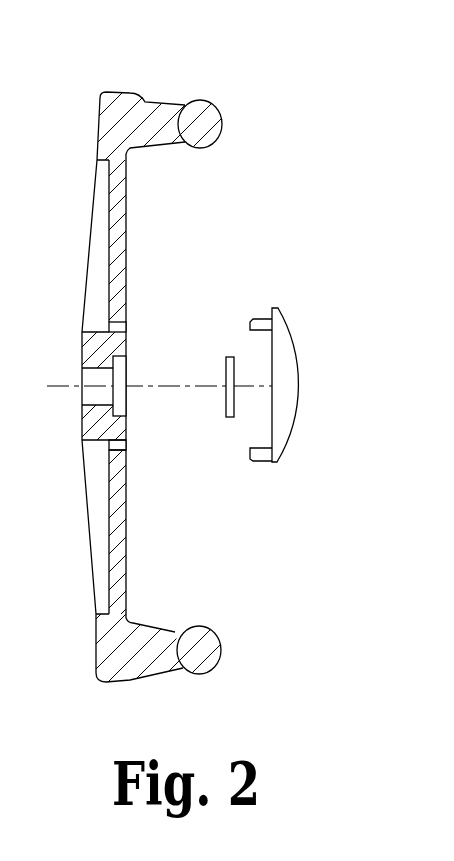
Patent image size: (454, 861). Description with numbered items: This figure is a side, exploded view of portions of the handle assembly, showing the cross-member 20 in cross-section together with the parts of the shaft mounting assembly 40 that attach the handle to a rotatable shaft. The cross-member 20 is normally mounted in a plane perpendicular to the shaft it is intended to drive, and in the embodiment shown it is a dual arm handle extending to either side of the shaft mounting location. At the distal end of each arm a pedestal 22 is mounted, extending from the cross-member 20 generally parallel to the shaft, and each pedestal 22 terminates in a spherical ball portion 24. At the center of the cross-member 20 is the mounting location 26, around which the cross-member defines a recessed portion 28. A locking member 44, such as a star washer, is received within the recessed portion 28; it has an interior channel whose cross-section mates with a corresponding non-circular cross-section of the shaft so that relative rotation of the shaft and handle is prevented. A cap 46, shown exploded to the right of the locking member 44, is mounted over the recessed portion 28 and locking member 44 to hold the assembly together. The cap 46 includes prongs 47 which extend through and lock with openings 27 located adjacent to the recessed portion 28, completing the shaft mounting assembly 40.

The cross-member 20 is at (155, 418).
The pedestal 22 is at (149, 123).
The spherical ball portion 24 is at (216, 125).
The mounting location 26 is at (92, 395).
The openings 27 is at (118, 452).
The recessed portion 28 is at (120, 366).
The shaft mounting assembly 40 is at (321, 387).
The locking member 44 is at (228, 357).
The cap 46 is at (291, 329).
The prongs 47 is at (260, 456).